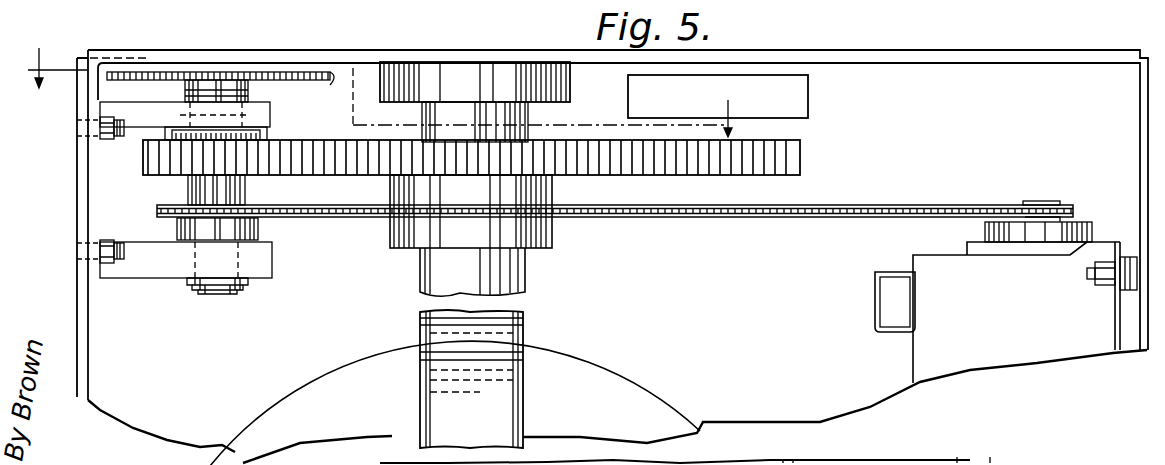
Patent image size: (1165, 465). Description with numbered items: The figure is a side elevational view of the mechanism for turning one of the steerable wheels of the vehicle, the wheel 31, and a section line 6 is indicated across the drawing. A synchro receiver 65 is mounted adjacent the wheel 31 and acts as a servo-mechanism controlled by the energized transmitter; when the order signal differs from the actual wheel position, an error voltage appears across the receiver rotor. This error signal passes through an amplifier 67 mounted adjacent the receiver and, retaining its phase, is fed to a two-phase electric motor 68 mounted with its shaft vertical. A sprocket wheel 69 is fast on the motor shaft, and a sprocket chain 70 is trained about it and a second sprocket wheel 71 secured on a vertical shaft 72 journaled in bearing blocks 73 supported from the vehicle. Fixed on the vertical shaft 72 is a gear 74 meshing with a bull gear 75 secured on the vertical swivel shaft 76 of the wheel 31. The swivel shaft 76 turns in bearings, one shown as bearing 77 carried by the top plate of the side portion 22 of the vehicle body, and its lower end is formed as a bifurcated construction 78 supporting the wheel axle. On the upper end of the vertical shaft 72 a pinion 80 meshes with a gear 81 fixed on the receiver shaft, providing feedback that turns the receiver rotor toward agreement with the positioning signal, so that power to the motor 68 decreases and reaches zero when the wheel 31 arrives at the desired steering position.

The section line 6- 6 is at (381, 91).
The side portion 22 is at (845, 56).
The wheel 31 is at (630, 393).
The synchro receiver 65 is at (255, 121).
The amplifier 67 is at (788, 100).
The two-phase electric motor 68 is at (928, 340).
The sprocket wheel 69 is at (1058, 206).
The sprocket chain 70 is at (646, 218).
The second sprocket wheel 71 is at (173, 204).
The vertical shaft 72 is at (210, 296).
The bearing blocks 73 is at (268, 110).
The gear 74 is at (255, 178).
The bull gear 75 is at (800, 140).
The vertical swivel shaft 76 is at (510, 284).
The bearing 77 is at (570, 86).
The bifurcated construction 78 is at (447, 400).
The pinion 80 is at (205, 77).
The gear 81 is at (335, 96).